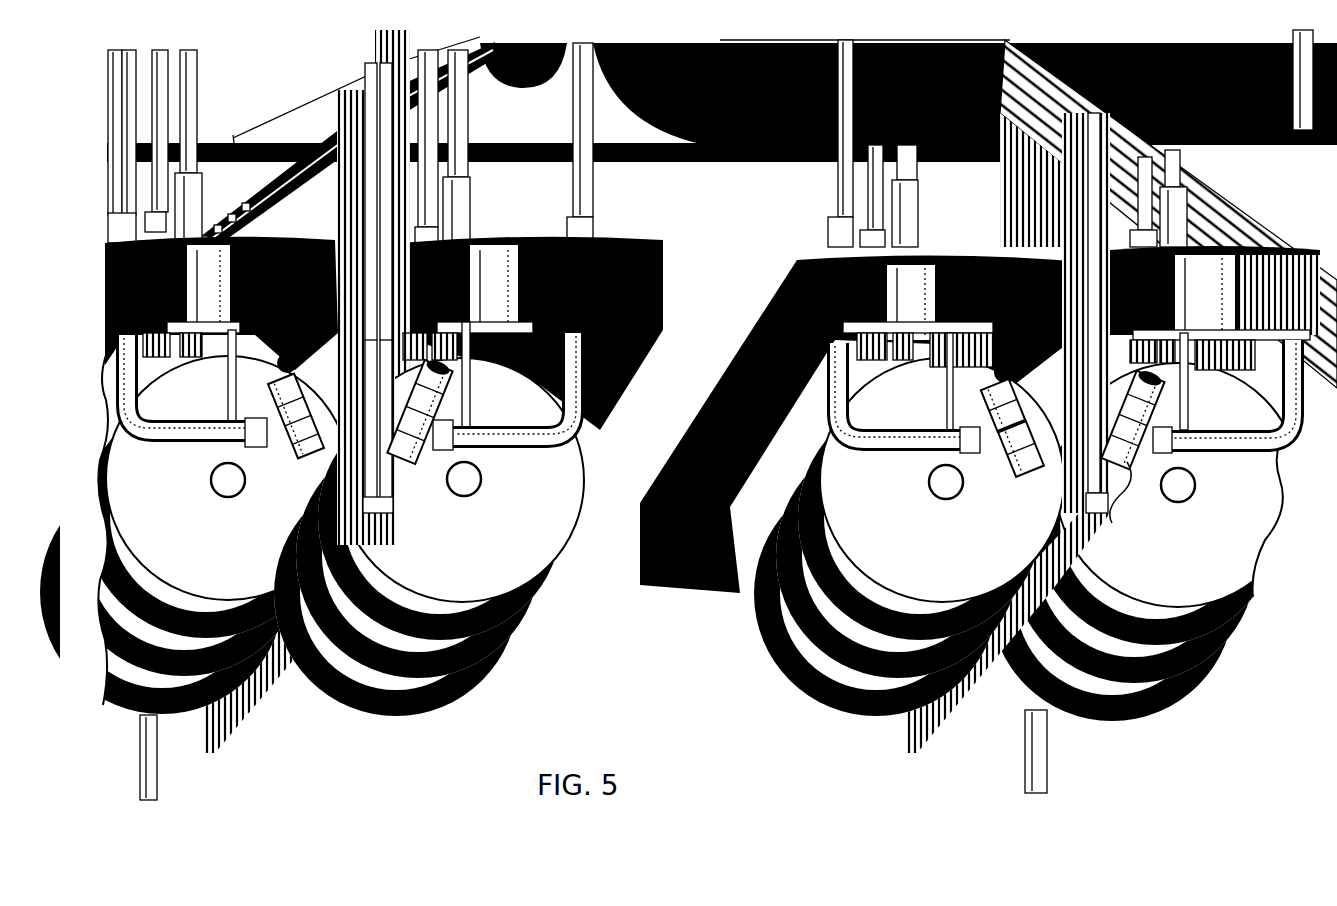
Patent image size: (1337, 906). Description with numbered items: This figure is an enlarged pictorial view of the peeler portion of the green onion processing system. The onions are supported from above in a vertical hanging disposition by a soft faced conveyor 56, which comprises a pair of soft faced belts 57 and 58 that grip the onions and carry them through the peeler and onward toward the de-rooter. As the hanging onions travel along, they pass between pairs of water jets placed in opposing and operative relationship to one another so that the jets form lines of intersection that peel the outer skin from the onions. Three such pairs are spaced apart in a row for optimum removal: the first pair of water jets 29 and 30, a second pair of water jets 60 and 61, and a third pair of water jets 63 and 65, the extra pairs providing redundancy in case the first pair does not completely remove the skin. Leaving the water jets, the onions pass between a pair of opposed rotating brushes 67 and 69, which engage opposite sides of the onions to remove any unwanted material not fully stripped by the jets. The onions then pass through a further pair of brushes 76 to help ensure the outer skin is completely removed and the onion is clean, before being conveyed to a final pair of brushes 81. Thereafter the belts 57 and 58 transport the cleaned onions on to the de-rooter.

The soft faced conveyor 56 is at (790, 272).
The soft faced belt 57 is at (1185, 250).
The soft faced belt 58 is at (932, 243).
The water jet 29 is at (1145, 385).
The water jet 30 is at (993, 393).
The water jet 61 is at (990, 415).
The water jet 60 is at (1145, 421).
The water jet 65 is at (1028, 462).
The water jet 63 is at (1112, 523).
The rotating brush 69 is at (837, 470).
The rotating brush 67 is at (1213, 593).
The pair of brushes 76 is at (1210, 647).
The final pair of brushes 81 is at (823, 720).